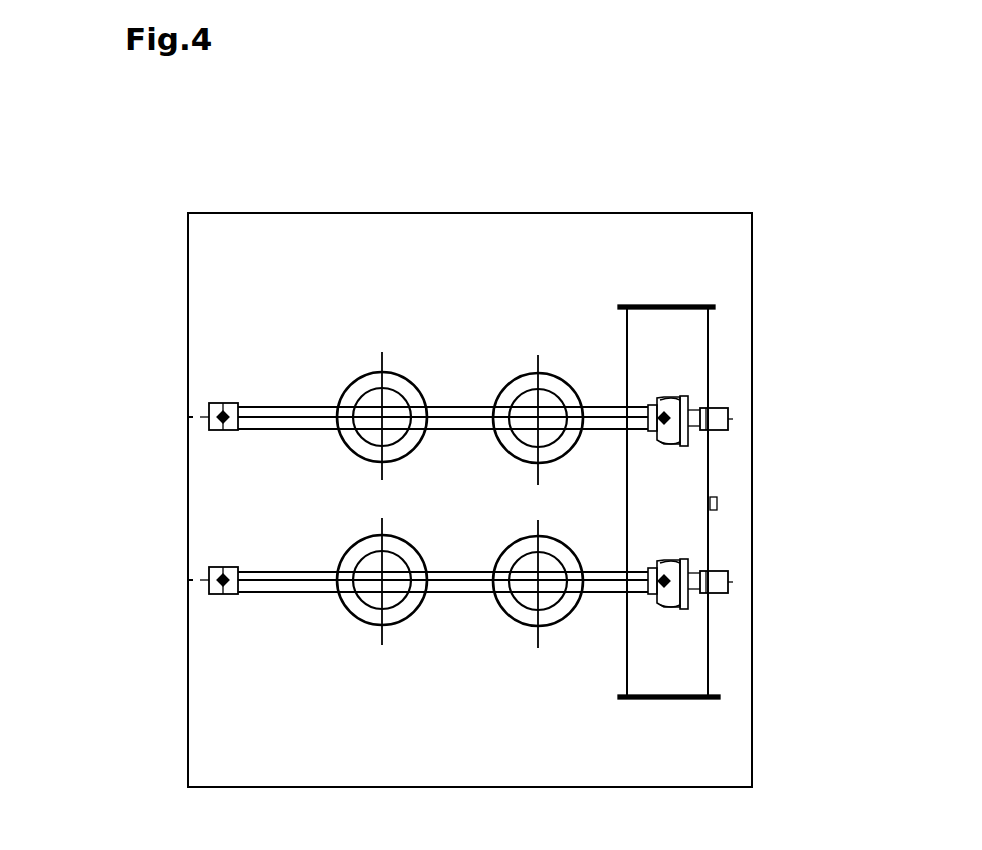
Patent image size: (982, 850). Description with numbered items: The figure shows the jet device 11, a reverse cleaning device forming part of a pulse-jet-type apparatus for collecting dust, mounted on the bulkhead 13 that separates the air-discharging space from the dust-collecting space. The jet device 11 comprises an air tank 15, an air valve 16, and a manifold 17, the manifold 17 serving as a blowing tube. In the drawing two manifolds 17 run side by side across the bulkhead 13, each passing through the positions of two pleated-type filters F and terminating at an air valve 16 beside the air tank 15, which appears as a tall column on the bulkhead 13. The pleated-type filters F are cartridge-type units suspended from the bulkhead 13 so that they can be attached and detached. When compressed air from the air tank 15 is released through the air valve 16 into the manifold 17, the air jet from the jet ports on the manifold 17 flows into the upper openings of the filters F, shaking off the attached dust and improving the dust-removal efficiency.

The jet device 11 is at (727, 462).
The bulkhead 13 is at (722, 748).
The air tank 15 is at (695, 530).
The air valve 16 is at (690, 408).
The manifold 17 is at (302, 422).
The pleated-type filter F is at (415, 560).